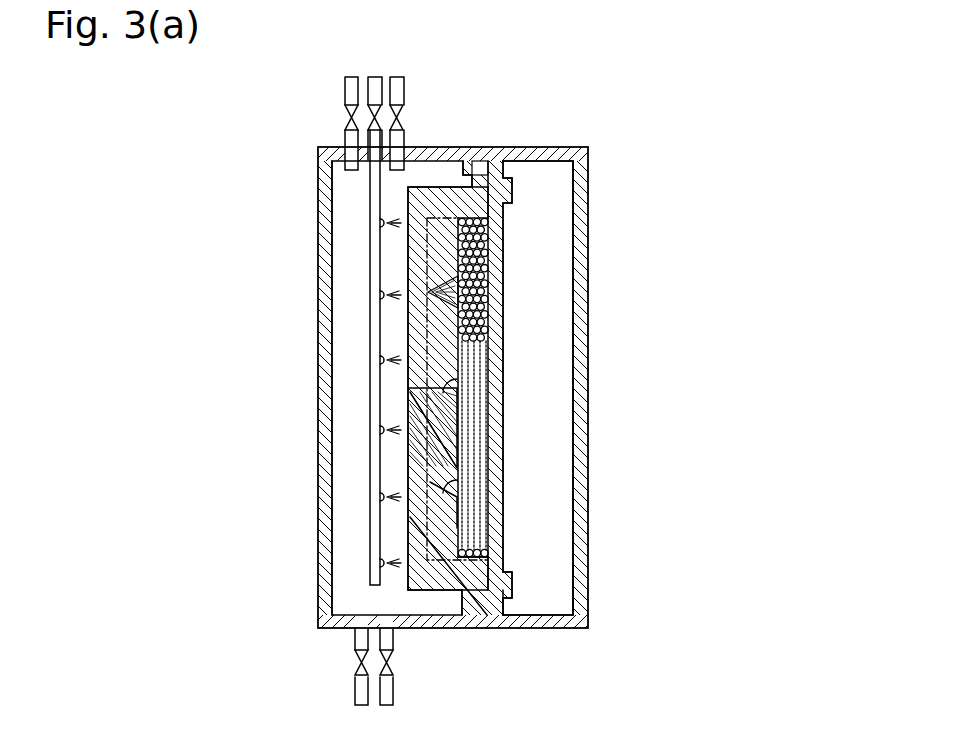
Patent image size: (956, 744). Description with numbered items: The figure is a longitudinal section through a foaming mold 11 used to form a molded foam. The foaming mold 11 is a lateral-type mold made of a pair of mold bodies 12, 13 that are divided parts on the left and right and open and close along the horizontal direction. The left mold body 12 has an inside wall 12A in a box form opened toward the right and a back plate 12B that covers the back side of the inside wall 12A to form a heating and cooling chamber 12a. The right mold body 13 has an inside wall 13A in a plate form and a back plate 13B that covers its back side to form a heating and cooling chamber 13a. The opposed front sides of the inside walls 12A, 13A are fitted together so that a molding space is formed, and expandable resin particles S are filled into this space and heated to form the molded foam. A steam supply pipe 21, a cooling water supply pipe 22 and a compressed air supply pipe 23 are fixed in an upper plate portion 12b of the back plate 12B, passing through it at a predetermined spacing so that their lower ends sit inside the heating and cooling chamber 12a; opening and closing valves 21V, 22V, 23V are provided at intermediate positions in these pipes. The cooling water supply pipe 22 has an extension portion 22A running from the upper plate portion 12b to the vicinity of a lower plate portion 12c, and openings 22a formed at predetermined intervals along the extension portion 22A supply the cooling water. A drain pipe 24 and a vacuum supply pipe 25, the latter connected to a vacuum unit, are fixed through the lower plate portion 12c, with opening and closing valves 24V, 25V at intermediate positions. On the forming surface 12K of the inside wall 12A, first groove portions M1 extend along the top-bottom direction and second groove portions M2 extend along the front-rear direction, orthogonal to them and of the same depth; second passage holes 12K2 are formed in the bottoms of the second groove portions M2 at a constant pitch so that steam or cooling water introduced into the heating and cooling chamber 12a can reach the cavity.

The foaming mold 11 is at (627, 143).
The mold body 12 is at (308, 243).
The heating and cooling chamber 12a is at (347, 455).
The inside wall 12A is at (445, 585).
The upper plate portion 12b is at (440, 151).
The back plate 12B is at (325, 518).
The lower plate portion 12c is at (430, 623).
The forming surface 12K is at (503, 343).
The second passage hole 12K2 is at (410, 388).
The mold body 13 is at (603, 285).
The heating and cooling chamber 13a is at (552, 560).
The inside wall 13A is at (503, 445).
The back plate 13B is at (588, 513).
The steam supply pipe 21 is at (406, 92).
The opening and closing valve 21V is at (406, 118).
The cooling water supply pipe 22 is at (372, 86).
The opening 22a is at (381, 295).
The extension portion 22A is at (372, 276).
The opening and closing valve 22V is at (380, 133).
The compressed air supply pipe 23 is at (347, 95).
The opening and closing valve 23V is at (346, 112).
The drain pipe 24 is at (393, 700).
The opening and closing valve 24V is at (393, 665).
The vacuum supply pipe 25 is at (358, 692).
The opening and closing valve 25V is at (356, 660).
The first groove portion M1 is at (410, 528).
The second groove portion M2 is at (372, 250).
The expandable resin particles S is at (488, 238).